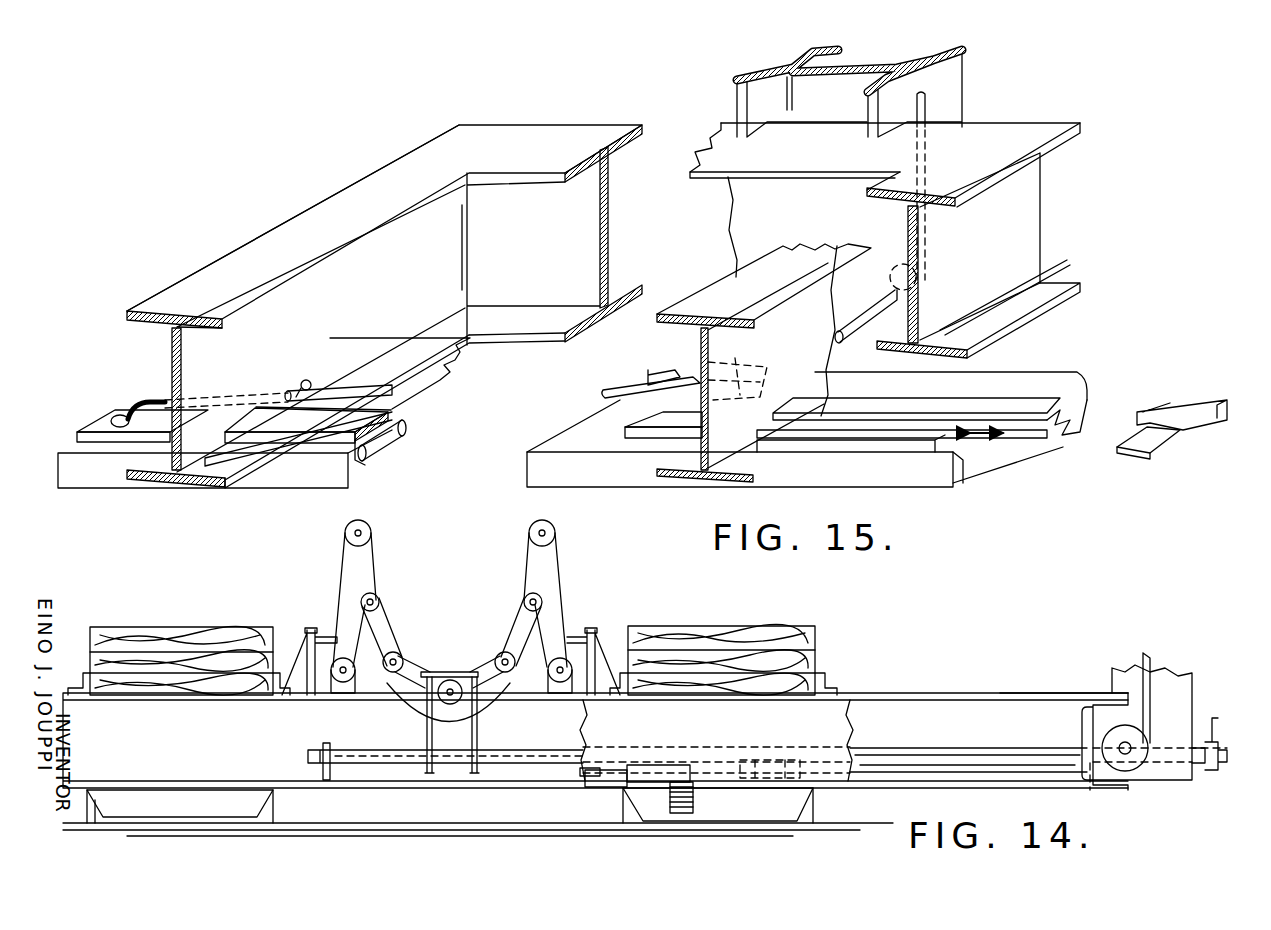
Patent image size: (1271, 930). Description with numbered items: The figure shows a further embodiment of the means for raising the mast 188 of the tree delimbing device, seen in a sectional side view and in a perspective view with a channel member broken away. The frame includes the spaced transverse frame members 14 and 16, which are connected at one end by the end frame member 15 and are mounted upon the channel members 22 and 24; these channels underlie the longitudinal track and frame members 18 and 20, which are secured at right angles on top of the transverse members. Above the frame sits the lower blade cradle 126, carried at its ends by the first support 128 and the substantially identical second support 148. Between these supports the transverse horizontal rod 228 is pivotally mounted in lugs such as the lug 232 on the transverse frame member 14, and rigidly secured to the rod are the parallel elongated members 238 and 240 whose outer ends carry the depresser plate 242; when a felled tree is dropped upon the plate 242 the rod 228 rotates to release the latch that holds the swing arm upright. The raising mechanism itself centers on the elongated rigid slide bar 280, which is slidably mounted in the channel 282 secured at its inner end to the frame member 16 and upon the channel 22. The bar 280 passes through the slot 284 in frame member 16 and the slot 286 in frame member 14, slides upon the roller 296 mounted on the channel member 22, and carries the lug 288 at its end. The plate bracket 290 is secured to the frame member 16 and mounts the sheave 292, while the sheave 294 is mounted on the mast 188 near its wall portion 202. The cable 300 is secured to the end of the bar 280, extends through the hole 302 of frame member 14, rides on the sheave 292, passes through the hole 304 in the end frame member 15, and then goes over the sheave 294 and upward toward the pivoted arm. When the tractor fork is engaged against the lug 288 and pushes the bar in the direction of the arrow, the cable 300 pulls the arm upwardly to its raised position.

In FIG. 15, the transverse frame member 14 is at (245, 248).
In FIG. 15, the end frame member 15 is at (567, 125).
In FIG. 14, the end frame member 15 is at (1058, 695).
In FIG. 15, the transverse frame member 16 is at (1032, 243).
In FIG. 14, the longitudinal track and frame member 18 is at (777, 626).
In FIG. 14, the longitudinal track and frame member 20 is at (150, 627).
In FIG. 15, the channel member 22 is at (95, 480).
In FIG. 14, the channel member 22 is at (620, 803).
In FIG. 14, the channel member 24 is at (278, 807).
In FIG. 14, the lower blade cradle 126 is at (423, 652).
In FIG. 14, the first support 128 is at (336, 567).
In FIG. 14, the second support 148 is at (566, 563).
In FIG. 15, the mast 188 is at (970, 113).
In FIG. 14, the mast 188 is at (1178, 712).
In FIG. 15, the wall portion 202 is at (954, 76).
In FIG. 14, the transverse horizontal rod 228 is at (490, 765).
In FIG. 14, the lug 232 is at (307, 757).
In FIG. 14, the elongated member 238 is at (473, 770).
In FIG. 14, the elongated member 240 is at (427, 768).
In FIG. 14, the depresser plate 242 is at (427, 673).
In FIG. 15, the slide bar 280 is at (105, 427).
In FIG. 14, the slide bar 280 is at (638, 773).
In FIG. 15, the channel 282 is at (840, 412).
In FIG. 14, the channel 282 is at (677, 760).
In FIG. 15, the slot 284 is at (759, 416).
In FIG. 15, the slot 286 is at (215, 438).
In FIG. 15, the lug 288 is at (1137, 447).
In FIG. 14, the lug 288 is at (590, 773).
In FIG. 15, the plate bracket 290 is at (665, 379).
In FIG. 15, the sheave 292 is at (736, 358).
In FIG. 14, the sheave 292 is at (770, 758).
In FIG. 15, the sheave 294 is at (923, 275).
In FIG. 14, the sheave 294 is at (1102, 737).
In FIG. 15, the roller 296 is at (395, 445).
In FIG. 15, the cable 300 is at (345, 397).
In FIG. 14, the cable 300 is at (710, 768).
In FIG. 15, the hole 302 is at (296, 392).
In FIG. 15, the hole 304 is at (891, 296).
In FIG. 14, the hole 304 is at (1090, 763).